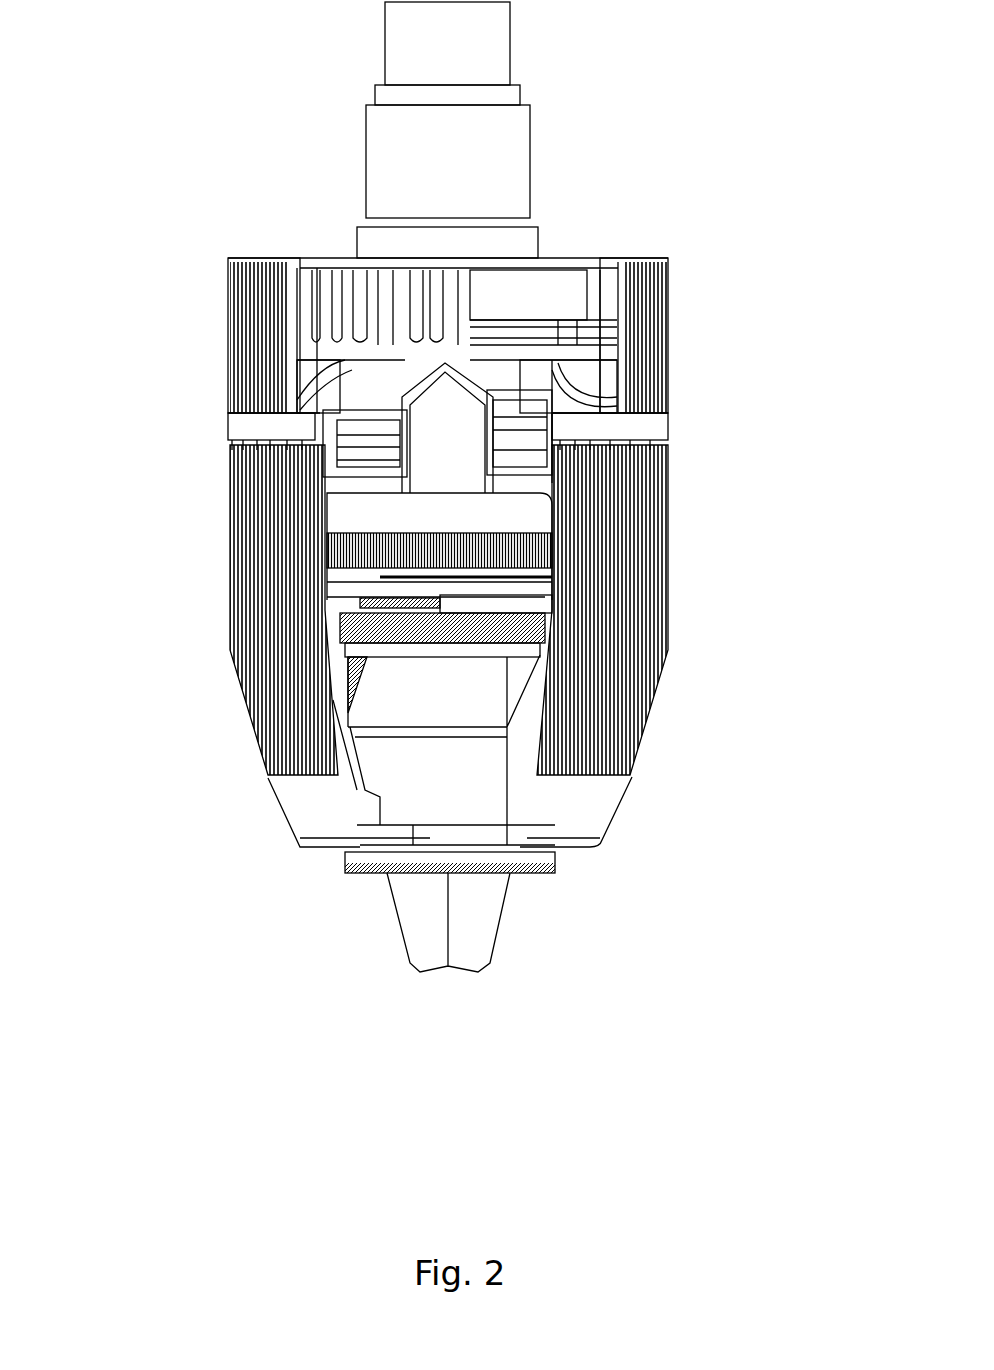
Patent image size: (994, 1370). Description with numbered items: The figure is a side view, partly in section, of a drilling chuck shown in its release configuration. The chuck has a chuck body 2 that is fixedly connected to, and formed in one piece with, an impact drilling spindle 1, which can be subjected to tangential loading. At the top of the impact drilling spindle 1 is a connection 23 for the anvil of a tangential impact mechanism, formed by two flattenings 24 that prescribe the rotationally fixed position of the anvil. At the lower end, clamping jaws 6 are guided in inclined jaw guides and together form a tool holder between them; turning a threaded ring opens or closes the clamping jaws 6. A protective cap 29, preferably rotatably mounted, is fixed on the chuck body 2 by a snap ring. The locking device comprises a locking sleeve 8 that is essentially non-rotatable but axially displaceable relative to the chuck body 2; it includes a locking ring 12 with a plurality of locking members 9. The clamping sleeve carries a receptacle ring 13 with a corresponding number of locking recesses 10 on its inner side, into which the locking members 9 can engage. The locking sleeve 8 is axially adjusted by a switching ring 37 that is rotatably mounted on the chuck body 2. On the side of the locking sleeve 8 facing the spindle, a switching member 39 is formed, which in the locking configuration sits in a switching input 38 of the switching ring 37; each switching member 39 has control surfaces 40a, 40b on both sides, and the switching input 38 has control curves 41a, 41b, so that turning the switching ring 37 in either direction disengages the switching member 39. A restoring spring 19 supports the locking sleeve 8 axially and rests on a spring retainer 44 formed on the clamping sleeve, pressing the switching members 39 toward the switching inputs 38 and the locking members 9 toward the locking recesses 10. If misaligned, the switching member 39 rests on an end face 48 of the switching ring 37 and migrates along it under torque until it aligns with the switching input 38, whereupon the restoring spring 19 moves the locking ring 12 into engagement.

The impact drilling spindle 1 is at (427, 225).
The chuck body 2 is at (407, 683).
The clamping jaws 6 is at (427, 928).
The locking sleeve 8 is at (352, 507).
The locking member 9 is at (316, 562).
The locking recess 10 is at (612, 533).
The locking ring 12 is at (360, 550).
The receptacle ring 13 is at (547, 523).
The restoring spring 19 is at (533, 587).
The connection 23 is at (473, 57).
The flattenings 24 is at (387, 63).
The protective cap 29 is at (332, 788).
The switching ring 37 is at (623, 310).
The switching input 38 is at (353, 358).
The switching member 39 is at (447, 403).
The control surface 40a is at (417, 390).
The control surface 40b is at (470, 378).
The control curve 41a is at (363, 352).
The control curve 41b is at (407, 345).
The spring retainer 44 is at (330, 608).
The end face 48 is at (558, 363).